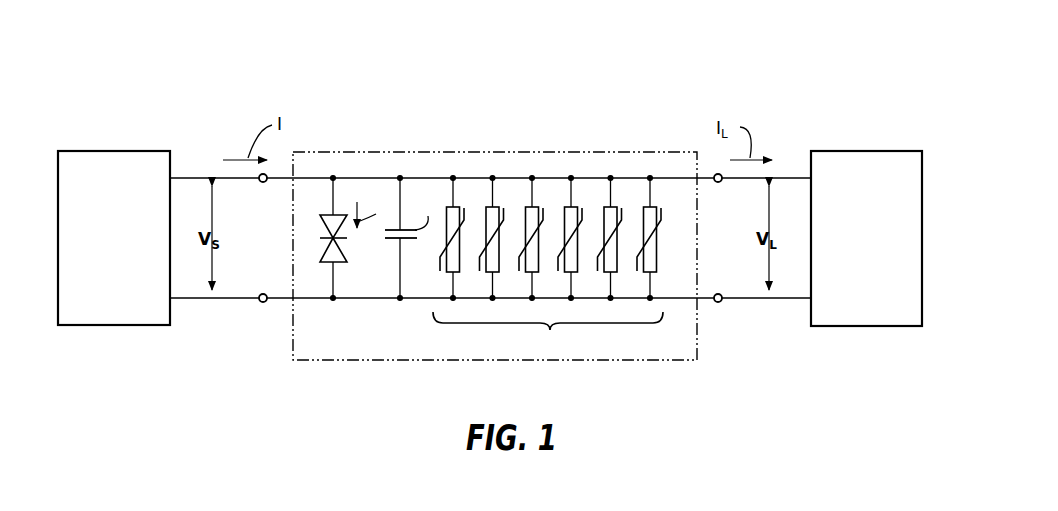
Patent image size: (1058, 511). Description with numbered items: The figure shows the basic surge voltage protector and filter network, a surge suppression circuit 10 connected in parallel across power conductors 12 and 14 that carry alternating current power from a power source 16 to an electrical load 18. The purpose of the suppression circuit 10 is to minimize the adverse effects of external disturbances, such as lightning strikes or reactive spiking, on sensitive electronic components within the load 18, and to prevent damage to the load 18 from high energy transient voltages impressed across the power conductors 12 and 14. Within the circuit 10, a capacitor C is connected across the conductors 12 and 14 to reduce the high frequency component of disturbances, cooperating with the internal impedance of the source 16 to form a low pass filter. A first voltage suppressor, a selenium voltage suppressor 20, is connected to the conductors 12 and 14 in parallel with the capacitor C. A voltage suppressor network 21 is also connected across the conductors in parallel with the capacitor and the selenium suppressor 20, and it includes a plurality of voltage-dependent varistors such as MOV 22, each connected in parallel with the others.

The surge suppression circuit 10 is at (470, 94).
The power conductor 12 is at (195, 177).
The power conductor 14 is at (195, 299).
The power source 16 is at (108, 150).
The electrical load 18 is at (858, 150).
The selenium voltage suppressor 20 is at (343, 216).
The voltage suppressor network 21 is at (548, 333).
The MOV varistor 22 is at (453, 206).